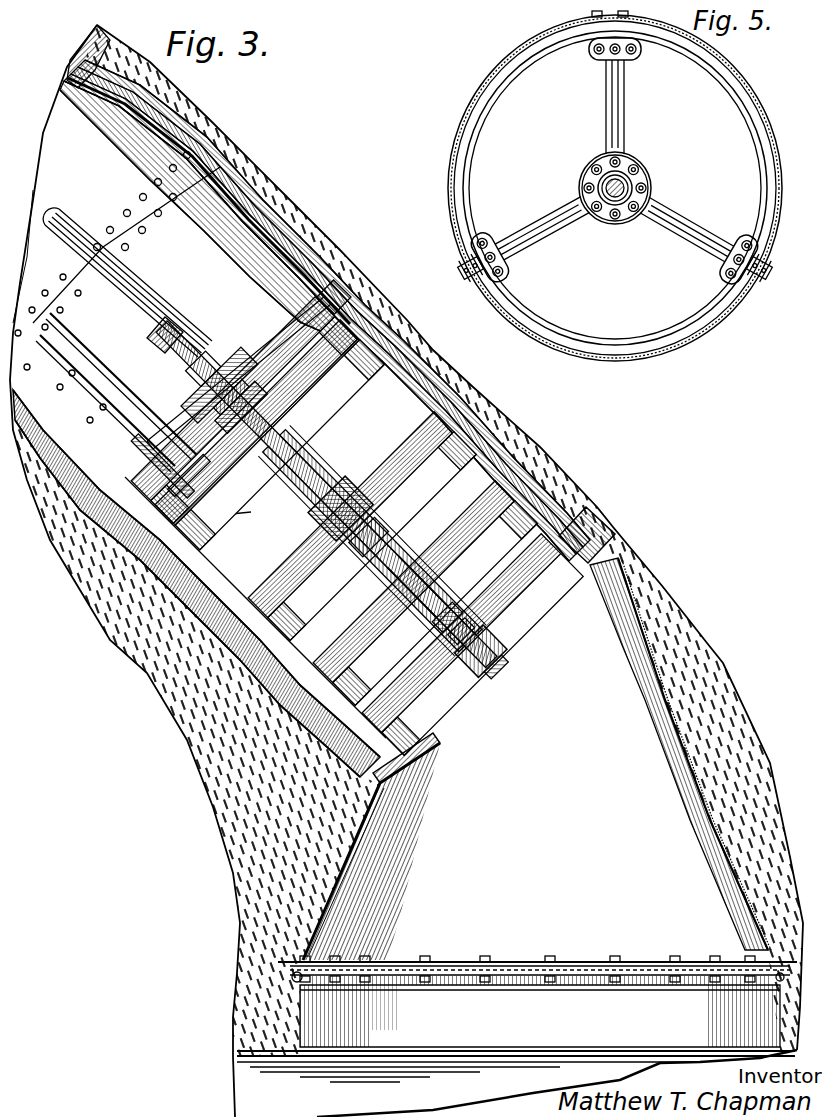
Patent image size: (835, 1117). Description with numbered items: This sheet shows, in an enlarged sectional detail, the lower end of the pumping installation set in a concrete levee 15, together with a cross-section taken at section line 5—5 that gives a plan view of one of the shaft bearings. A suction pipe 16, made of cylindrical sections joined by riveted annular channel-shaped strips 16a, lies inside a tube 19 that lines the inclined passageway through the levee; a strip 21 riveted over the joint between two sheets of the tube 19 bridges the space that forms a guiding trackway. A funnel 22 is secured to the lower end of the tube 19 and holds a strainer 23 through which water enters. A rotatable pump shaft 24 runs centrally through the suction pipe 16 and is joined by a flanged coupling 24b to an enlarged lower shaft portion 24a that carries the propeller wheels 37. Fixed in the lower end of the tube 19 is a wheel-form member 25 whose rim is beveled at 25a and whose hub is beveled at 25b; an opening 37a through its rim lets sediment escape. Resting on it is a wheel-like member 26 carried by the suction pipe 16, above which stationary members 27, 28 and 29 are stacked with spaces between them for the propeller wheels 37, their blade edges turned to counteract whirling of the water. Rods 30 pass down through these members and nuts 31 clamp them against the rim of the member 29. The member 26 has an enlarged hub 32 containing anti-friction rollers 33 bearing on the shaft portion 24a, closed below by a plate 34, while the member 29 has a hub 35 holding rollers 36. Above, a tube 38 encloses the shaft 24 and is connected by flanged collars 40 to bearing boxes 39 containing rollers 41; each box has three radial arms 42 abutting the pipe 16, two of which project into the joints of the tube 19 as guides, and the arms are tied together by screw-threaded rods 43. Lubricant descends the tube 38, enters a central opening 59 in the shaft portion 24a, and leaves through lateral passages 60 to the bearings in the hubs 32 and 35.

In FIG. 3, the section line 5 is at (356, 257).
In FIG. 3, the levee 15 is at (667, 607).
In FIG. 3, the suction pipe 16 is at (157, 93).
In FIG. 5, the suction pipe 16 is at (468, 160).
In FIG. 3, the annular channel-shaped strips 16a is at (220, 167).
In FIG. 3, the tube 19 is at (173, 110).
In FIG. 5, the tube 19 is at (460, 157).
In FIG. 5, the strip 21 is at (483, 290).
In FIG. 3, the funnel 22 is at (677, 710).
In FIG. 3, the strainer 23 is at (517, 967).
In FIG. 3, the pump shaft 24 is at (167, 350).
In FIG. 5, the pump shaft 24 is at (613, 207).
In FIG. 3, the lower shaft portion 24a is at (436, 524).
In FIG. 3, the flanged coupling 24b is at (179, 458).
In FIG. 3, the wheel-form member 25 is at (393, 767).
In FIG. 3, the beveled rim face 25a is at (574, 538).
In FIG. 3, the beveled hub face 25b is at (528, 646).
In FIG. 3, the wheel-like member 26 is at (395, 728).
In FIG. 3, the stationary member 27 is at (367, 707).
In FIG. 3, the stationary member 28 is at (262, 598).
In FIG. 3, the upper stationary member 29 is at (258, 482).
In FIG. 3, the rods 30 is at (390, 343).
In FIG. 3, the nuts 31 is at (350, 323).
In FIG. 3, the hub 32 is at (500, 614).
In FIG. 3, the anti-friction rollers 33 is at (478, 600).
In FIG. 3, the plate 34 is at (522, 658).
In FIG. 3, the hub 35 is at (228, 518).
In FIG. 3, the anti-friction rollers 36 is at (258, 483).
In FIG. 3, the propeller wheels 37 is at (291, 562).
In FIG. 3, the opening 37a is at (387, 783).
In FIG. 3, the tube 38 is at (148, 320).
In FIG. 5, the tube 38 is at (620, 213).
In FIG. 3, the bearing boxes 39 is at (240, 350).
In FIG. 5, the bearing boxes 39 is at (663, 194).
In FIG. 3, the flanged collars 40 is at (195, 380).
In FIG. 5, the flanged collars 40 is at (652, 176).
In FIG. 3, the anti-friction rollers 41 is at (237, 360).
In FIG. 3, the radial arms 42 is at (318, 303).
In FIG. 5, the radial arms 42 is at (605, 143).
In FIG. 3, the screw-threaded rods 43 is at (233, 217).
In FIG. 5, the screw-threaded rods 43 is at (618, 62).
In FIG. 3, the central opening 59 is at (269, 442).
In FIG. 3, the lateral passages 60 is at (403, 715).